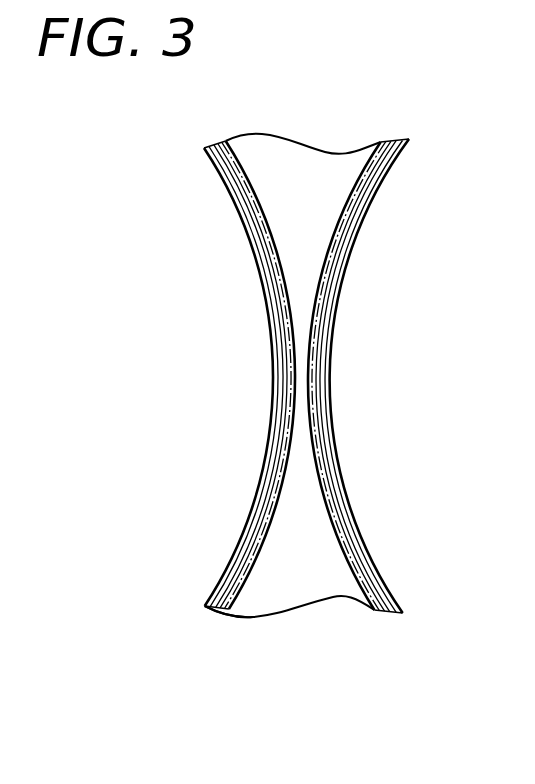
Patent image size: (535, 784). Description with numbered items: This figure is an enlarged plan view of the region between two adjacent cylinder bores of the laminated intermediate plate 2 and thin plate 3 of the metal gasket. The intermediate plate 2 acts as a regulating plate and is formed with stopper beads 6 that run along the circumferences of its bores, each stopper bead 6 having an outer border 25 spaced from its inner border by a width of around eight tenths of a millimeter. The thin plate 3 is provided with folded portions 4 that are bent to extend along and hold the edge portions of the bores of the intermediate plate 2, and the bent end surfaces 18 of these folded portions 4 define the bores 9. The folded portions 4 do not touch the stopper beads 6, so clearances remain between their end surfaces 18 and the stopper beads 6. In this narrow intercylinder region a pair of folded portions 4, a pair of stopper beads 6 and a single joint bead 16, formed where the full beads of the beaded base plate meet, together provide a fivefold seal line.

The intermediate plate 2 is at (321, 361).
The thin plate 3 is at (301, 401).
The folded portions 4 is at (270, 452).
The stopper beads 6 is at (280, 286).
The bores 9 is at (252, 246).
The joint bead 16 is at (289, 337).
The end surfaces 18 is at (281, 405).
The outer border 25 is at (253, 558).